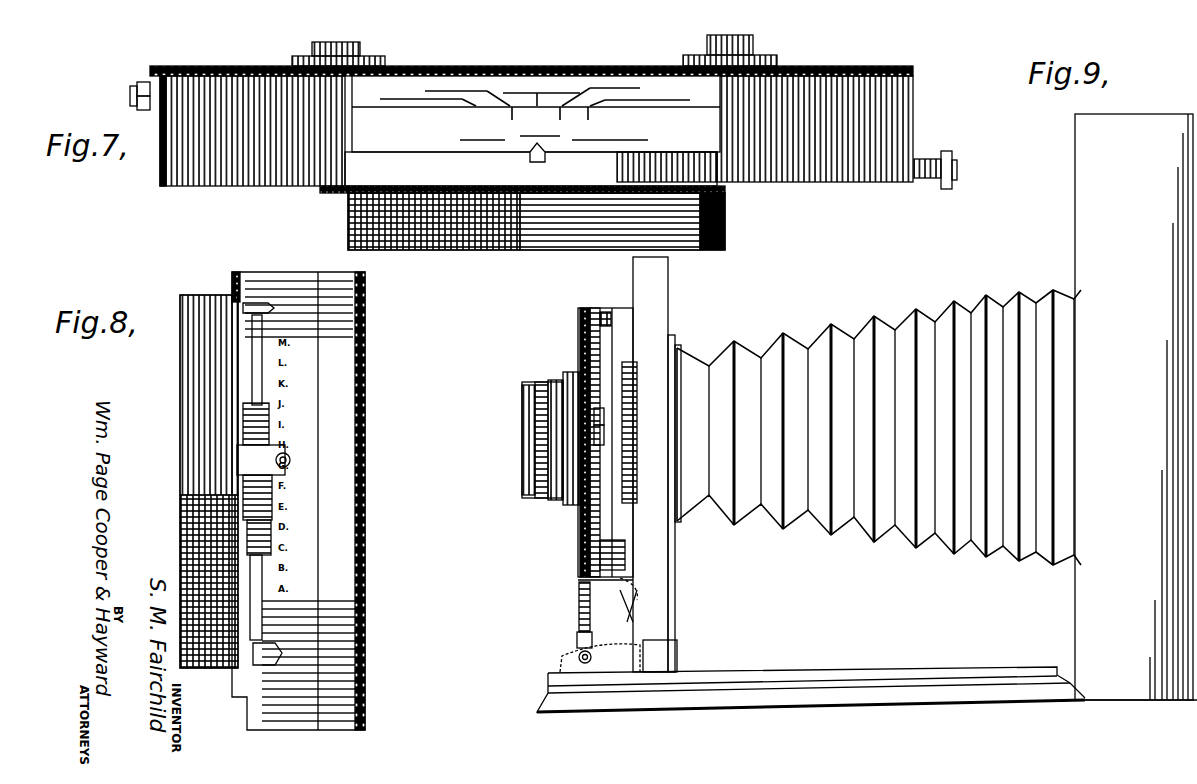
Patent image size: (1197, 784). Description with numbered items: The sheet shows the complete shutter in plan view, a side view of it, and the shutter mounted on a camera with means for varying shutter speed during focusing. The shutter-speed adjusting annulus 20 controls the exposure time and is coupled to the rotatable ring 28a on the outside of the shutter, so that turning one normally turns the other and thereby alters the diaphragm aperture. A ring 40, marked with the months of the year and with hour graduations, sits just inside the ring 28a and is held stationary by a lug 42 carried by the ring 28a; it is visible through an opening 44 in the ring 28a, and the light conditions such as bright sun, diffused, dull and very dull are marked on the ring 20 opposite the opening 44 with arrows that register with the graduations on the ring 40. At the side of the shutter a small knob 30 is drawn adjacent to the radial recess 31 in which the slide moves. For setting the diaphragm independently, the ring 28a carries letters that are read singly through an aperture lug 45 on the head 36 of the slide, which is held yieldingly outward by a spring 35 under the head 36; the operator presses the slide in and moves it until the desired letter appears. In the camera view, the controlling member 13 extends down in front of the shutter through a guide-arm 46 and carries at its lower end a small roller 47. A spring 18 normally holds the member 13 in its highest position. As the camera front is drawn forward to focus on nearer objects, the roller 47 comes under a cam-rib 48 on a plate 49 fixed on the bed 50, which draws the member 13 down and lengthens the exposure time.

In FIG. 9, the controlling member 13 is at (580, 542).
In FIG. 9, the spring 18 is at (579, 602).
In FIG. 7, the shutter-speed adjusting annulus 20 is at (228, 66).
In FIG. 9, the shutter-speed adjusting annulus 20 is at (578, 310).
In FIG. 7, the rotatable ring 28a is at (914, 128).
In FIG. 8, the rotatable ring 28a is at (320, 586).
In FIG. 9, the rotatable ring 28a is at (633, 523).
In FIG. 7, the knob 30 is at (136, 88).
In FIG. 9, the knob 30 is at (601, 420).
In FIG. 7, the radial recess 31 is at (136, 106).
In FIG. 9, the radial recess 31 is at (601, 437).
In FIG. 8, the spring 35 is at (245, 428).
In FIG. 7, the head of the slide 36 is at (958, 170).
In FIG. 8, the head of the slide 36 is at (243, 487).
In FIG. 7, the ring 40 is at (536, 114).
In FIG. 7, the lug 42 is at (529, 160).
In FIG. 7, the opening 44 is at (378, 153).
In FIG. 8, the aperture lug 45 is at (287, 467).
In FIG. 9, the guide-arm 46 is at (578, 650).
In FIG. 9, the roller 47 is at (566, 660).
In FIG. 9, the cam-rib 48 is at (626, 588).
In FIG. 9, the plate 49 is at (645, 656).
In FIG. 9, the bed 50 is at (679, 703).